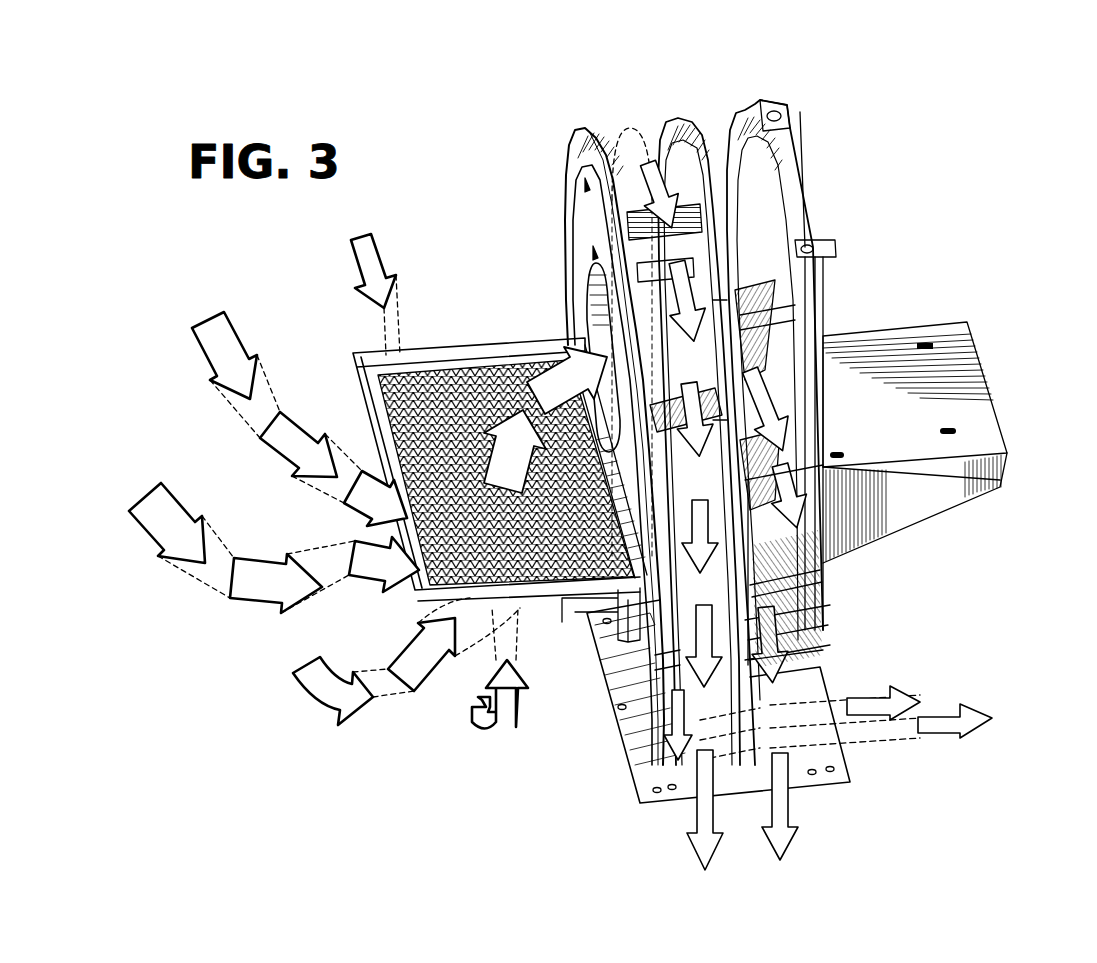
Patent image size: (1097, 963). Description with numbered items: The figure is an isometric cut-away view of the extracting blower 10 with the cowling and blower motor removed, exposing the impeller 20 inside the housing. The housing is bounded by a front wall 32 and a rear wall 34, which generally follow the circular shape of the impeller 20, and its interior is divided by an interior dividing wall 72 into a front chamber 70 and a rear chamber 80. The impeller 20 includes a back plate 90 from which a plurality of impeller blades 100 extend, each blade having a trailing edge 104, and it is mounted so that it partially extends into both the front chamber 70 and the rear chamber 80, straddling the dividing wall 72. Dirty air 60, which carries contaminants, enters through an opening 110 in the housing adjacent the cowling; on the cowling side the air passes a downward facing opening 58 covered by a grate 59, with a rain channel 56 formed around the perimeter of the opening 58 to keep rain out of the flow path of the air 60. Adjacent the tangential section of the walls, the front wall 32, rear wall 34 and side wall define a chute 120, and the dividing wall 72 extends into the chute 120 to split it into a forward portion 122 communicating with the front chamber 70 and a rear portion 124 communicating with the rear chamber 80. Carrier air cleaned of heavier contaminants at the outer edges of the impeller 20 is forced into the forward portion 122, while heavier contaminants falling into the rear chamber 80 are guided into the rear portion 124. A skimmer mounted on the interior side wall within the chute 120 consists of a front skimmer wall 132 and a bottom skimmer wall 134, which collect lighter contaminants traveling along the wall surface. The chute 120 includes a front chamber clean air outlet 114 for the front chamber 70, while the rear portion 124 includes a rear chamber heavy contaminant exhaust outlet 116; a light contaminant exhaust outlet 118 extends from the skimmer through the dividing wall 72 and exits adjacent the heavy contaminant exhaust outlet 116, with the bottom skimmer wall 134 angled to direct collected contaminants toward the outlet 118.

The extracting blower 10 is at (948, 278).
The impeller 20 is at (700, 285).
The front wall 32 is at (655, 700).
The rear wall 34 is at (817, 652).
The rain channel 56 is at (365, 355).
The downward facing opening 58 is at (462, 382).
The grate 59 is at (566, 598).
The dirty air 60 is at (140, 508).
The front chamber 70 is at (625, 128).
The interior dividing wall 72 is at (666, 130).
The rear chamber 80 is at (712, 128).
The back plate 90 is at (757, 318).
The impeller blades 100 is at (715, 300).
The trailing edge 104 is at (748, 305).
The opening 110 is at (588, 275).
The front chamber clean air outlet 114 is at (690, 782).
The rear chamber heavy contaminant exhaust outlet 116 is at (940, 732).
The light contaminant exhaust outlet 118 is at (873, 693).
The chute 120 is at (722, 718).
The forward portion 122 is at (660, 720).
The rear portion 124 is at (770, 600).
The front skimmer wall 132 is at (662, 665).
The bottom skimmer wall 134 is at (640, 720).